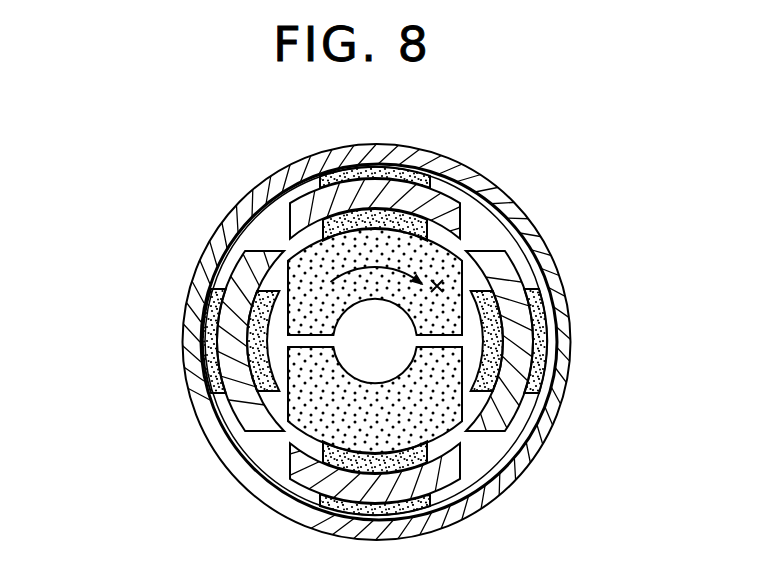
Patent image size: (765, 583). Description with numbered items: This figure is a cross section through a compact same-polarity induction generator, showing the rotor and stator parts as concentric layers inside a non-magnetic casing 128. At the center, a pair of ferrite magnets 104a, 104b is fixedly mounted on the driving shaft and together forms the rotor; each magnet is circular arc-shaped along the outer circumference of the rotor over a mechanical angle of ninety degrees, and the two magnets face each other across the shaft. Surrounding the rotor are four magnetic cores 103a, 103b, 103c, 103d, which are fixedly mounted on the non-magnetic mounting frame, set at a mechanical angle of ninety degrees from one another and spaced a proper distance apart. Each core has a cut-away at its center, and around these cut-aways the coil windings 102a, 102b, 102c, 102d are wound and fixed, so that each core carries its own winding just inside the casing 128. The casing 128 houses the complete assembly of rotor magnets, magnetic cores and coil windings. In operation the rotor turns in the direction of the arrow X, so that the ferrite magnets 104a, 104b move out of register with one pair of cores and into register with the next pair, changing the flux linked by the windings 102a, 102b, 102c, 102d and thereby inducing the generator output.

The non-magnetic casing 128 is at (188, 300).
The coil winding 102a is at (423, 168).
The coil winding 102b is at (550, 350).
The coil winding 102c is at (433, 518).
The coil winding 102d is at (186, 361).
The magnetic core 103a is at (452, 203).
The magnetic core 103b is at (512, 280).
The magnetic core 103c is at (453, 467).
The magnetic core 103d is at (246, 262).
The ferrite magnet 104a is at (338, 242).
The ferrite magnet 104b is at (445, 405).